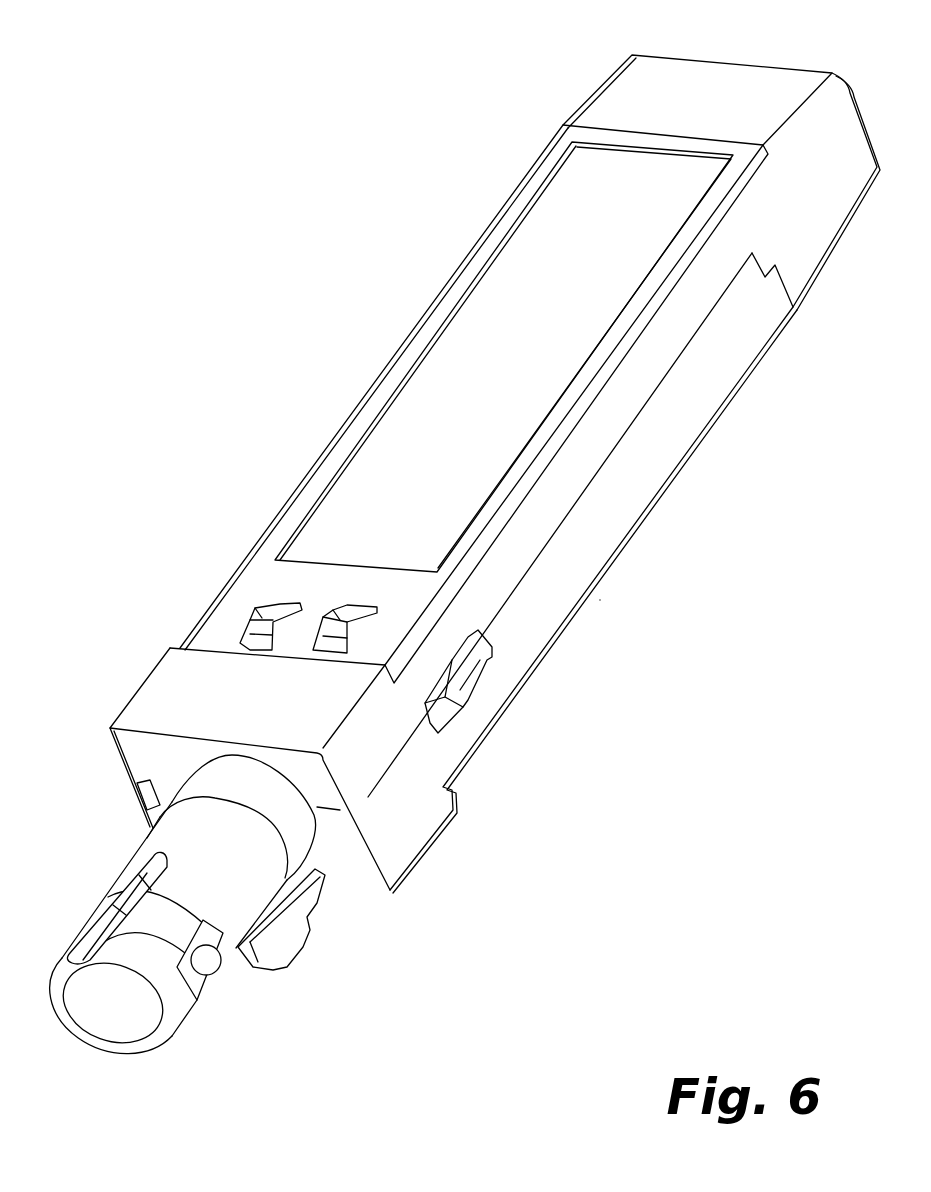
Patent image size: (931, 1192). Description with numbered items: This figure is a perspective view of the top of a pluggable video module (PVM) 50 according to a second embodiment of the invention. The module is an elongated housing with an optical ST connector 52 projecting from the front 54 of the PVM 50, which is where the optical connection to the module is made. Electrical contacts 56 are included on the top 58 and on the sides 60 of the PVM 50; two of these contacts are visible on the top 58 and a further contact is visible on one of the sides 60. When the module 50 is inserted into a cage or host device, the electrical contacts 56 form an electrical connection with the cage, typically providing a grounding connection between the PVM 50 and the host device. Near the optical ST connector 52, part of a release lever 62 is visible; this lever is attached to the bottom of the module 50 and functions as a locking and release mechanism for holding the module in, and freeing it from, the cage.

The pluggable video module 50 is at (530, 451).
The optical ST connector 52 is at (178, 1007).
The front 54 is at (145, 757).
The electrical contacts 56 is at (262, 620).
The top 58 is at (425, 402).
The sides 60 is at (553, 587).
The release lever 62 is at (312, 944).